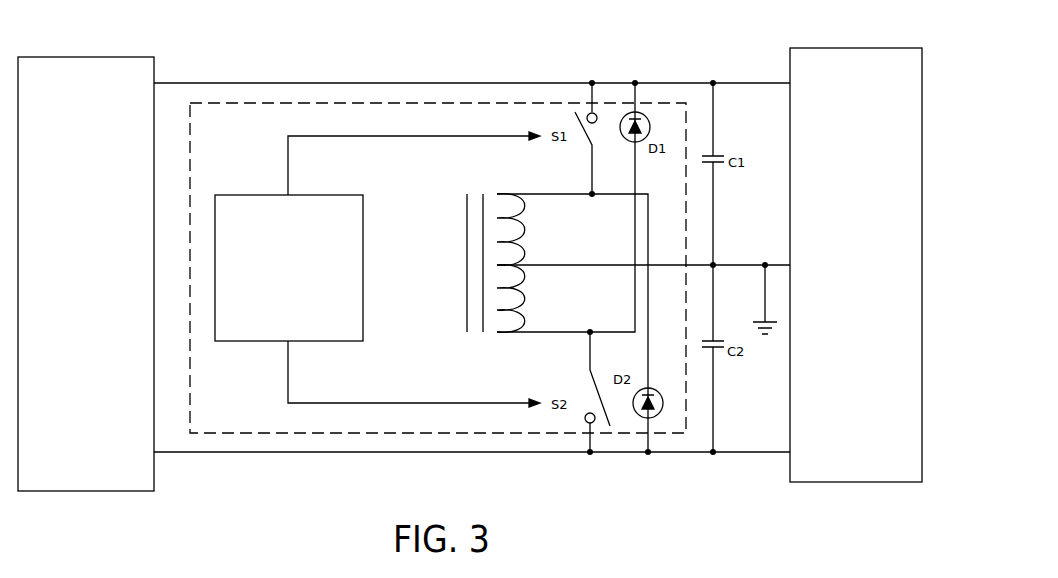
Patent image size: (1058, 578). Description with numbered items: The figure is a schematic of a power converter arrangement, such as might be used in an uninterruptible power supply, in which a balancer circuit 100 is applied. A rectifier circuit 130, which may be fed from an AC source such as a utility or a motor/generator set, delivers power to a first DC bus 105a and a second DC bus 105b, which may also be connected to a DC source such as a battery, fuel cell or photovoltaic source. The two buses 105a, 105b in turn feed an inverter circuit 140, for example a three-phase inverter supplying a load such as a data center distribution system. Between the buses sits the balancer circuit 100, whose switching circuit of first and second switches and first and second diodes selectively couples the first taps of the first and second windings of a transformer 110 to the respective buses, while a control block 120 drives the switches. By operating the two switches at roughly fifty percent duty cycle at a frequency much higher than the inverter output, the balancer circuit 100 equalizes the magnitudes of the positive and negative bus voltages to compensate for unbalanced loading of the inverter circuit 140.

The rectifier circuit 130 is at (88, 57).
The inverter circuit 140 is at (858, 48).
The first DC bus 105a is at (212, 83).
The second DC bus 105b is at (192, 452).
The balancer circuit 100 is at (345, 103).
The control unit 120 is at (288, 195).
The transformer 110 is at (453, 215).